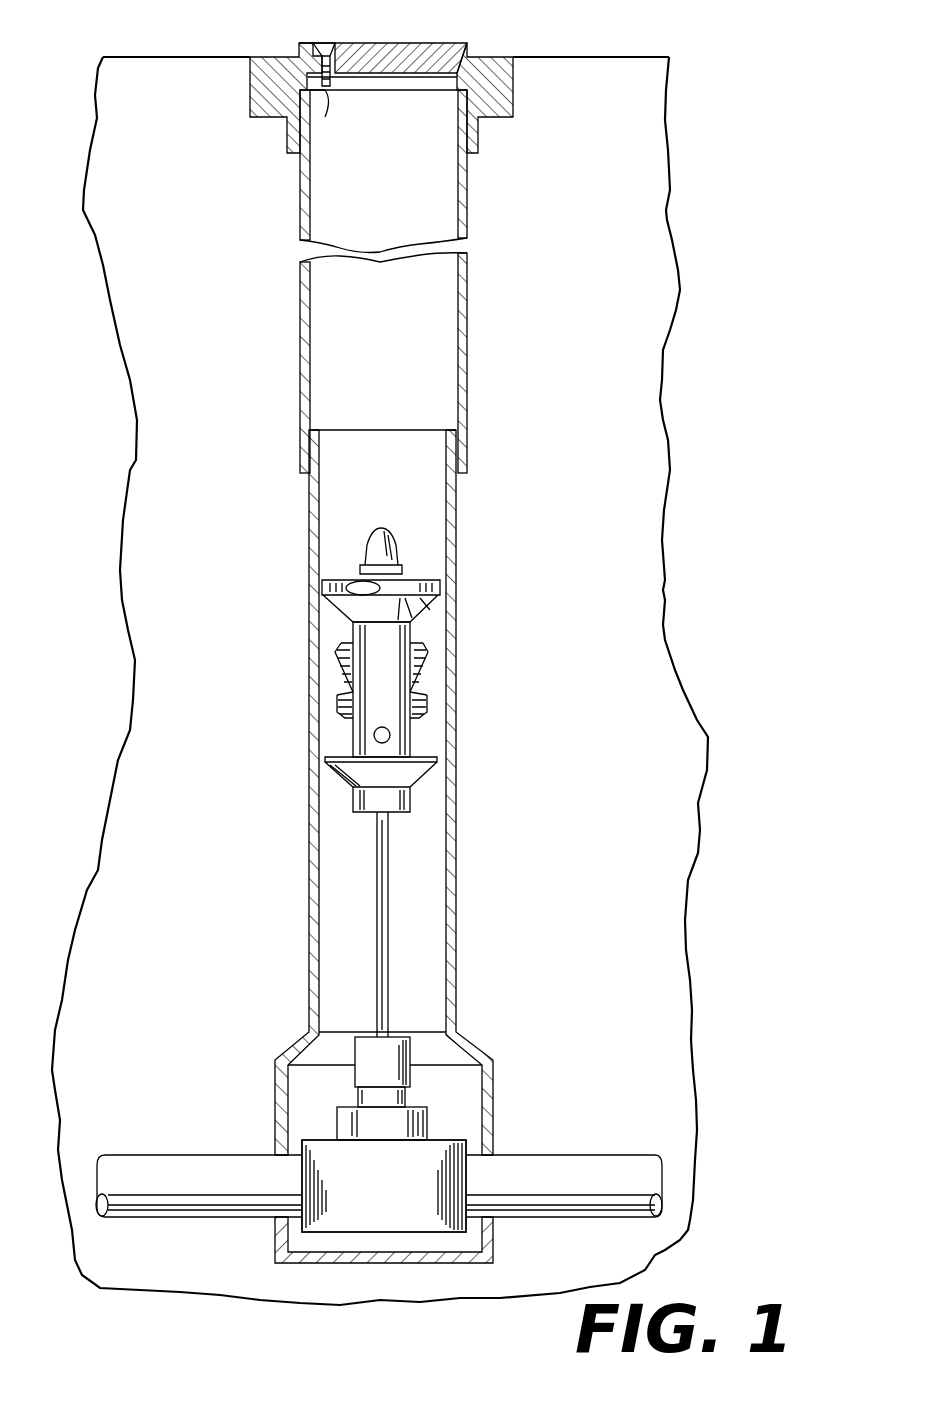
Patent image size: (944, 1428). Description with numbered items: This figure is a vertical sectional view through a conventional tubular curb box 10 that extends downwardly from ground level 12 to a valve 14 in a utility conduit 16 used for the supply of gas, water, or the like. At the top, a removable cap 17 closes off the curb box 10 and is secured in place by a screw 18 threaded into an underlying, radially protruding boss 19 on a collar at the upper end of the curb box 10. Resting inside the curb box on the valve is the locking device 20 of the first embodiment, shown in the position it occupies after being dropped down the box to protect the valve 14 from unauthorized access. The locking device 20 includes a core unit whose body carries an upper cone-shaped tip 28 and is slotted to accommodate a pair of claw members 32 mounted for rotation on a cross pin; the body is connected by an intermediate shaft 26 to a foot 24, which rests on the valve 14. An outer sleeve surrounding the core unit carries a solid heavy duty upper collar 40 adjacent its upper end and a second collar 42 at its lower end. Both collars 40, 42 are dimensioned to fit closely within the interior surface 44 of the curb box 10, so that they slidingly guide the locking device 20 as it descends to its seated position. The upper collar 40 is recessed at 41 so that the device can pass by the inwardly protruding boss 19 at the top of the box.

The curb box 10 is at (505, 436).
The ground level 12 is at (196, 57).
The valve 14 is at (454, 1107).
The utility conduit 16 is at (545, 1152).
The removable cap 17 is at (410, 43).
The screw 18 is at (326, 48).
The boss 19 is at (322, 95).
The locking device 20 is at (445, 695).
The foot 24 is at (410, 1052).
The intermediate shaft 26 is at (390, 943).
The cone-shaped tip 28 is at (390, 545).
The claw members 32 is at (425, 662).
The upper collar 40 is at (440, 590).
The recess 41 is at (355, 592).
The second collar 42 is at (420, 778).
The interior surface 44 is at (445, 855).